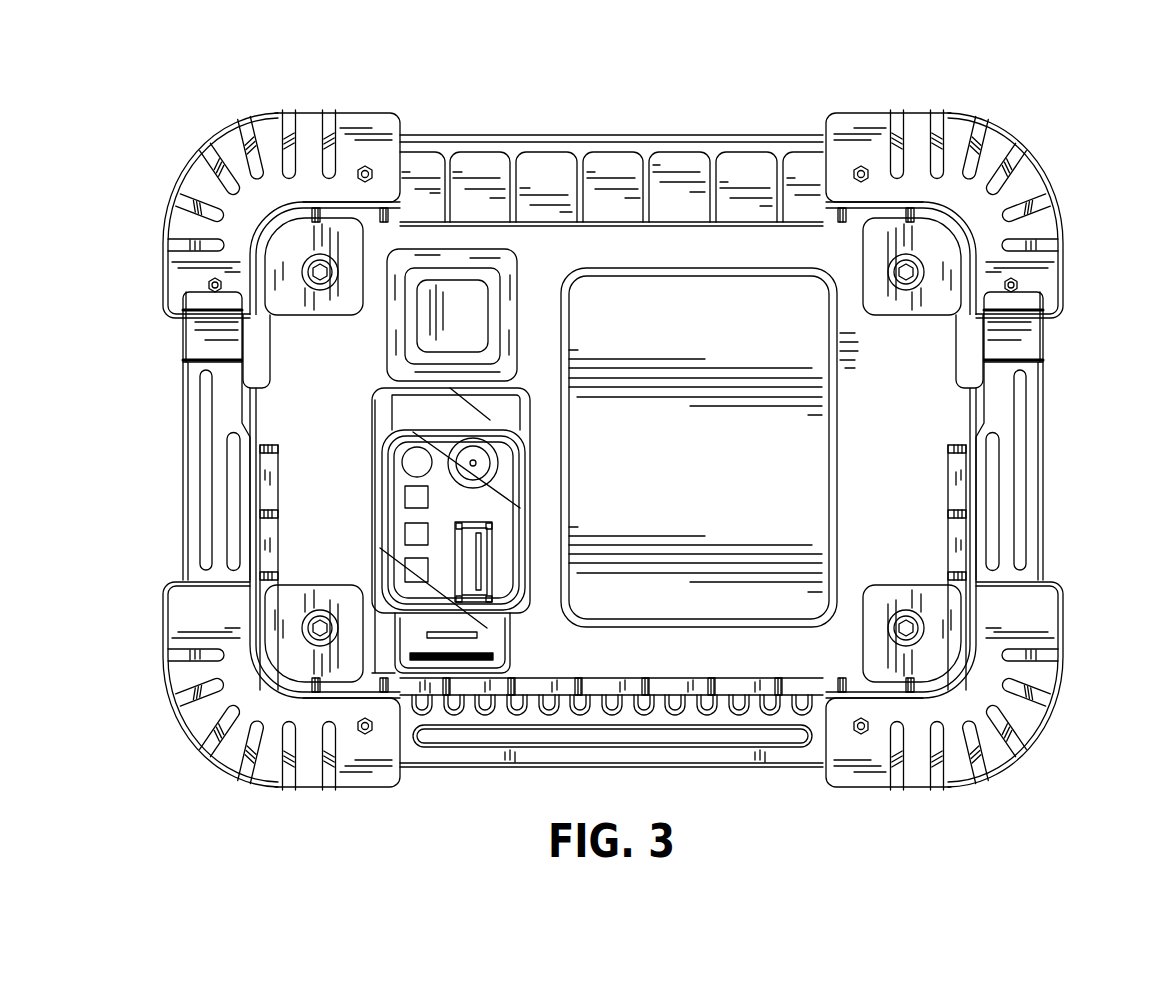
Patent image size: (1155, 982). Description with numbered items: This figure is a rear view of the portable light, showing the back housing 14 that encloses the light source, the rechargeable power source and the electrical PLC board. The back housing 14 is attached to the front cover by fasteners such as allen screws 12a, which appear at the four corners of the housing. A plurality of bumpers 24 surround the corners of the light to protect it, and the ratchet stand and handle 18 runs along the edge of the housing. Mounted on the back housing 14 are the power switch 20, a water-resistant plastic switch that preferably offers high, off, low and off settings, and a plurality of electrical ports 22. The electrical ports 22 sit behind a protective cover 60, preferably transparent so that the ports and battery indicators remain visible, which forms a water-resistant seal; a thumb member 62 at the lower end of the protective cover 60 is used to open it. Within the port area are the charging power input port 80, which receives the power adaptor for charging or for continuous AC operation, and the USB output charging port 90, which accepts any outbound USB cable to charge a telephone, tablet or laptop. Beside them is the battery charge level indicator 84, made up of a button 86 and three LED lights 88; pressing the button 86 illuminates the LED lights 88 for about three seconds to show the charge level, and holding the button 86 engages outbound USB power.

The allen screws 12a is at (898, 274).
The back housing 14 is at (913, 482).
The ratchet stand and handle 18 is at (1040, 488).
The power switch 20 is at (465, 305).
The electrical ports 22 is at (350, 512).
The bumpers 24 is at (229, 160).
The protective cover 60 is at (477, 530).
The thumb member 62 is at (487, 644).
The charging power input port 80 is at (476, 462).
The battery charge level indicator 84 is at (355, 569).
The button 86 is at (416, 462).
The LED lights 88 is at (430, 562).
The USB output charging port 90 is at (470, 570).